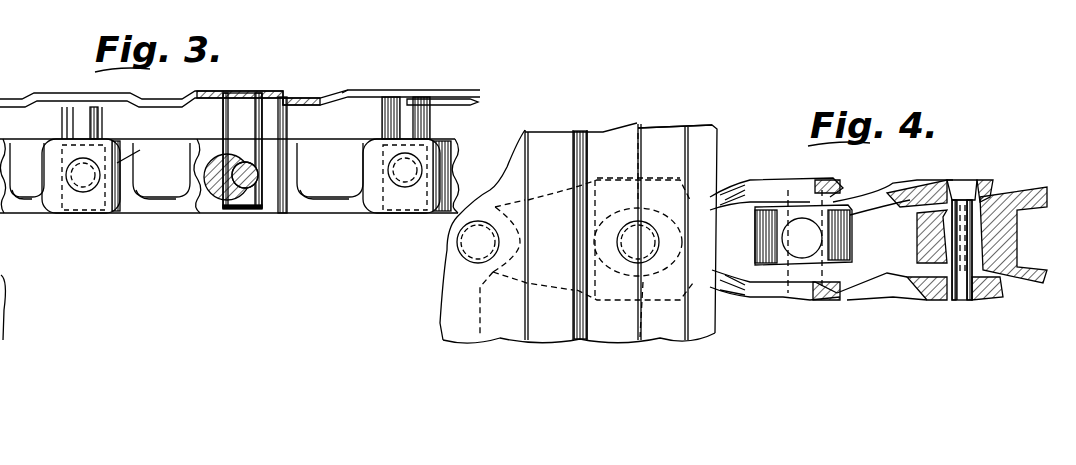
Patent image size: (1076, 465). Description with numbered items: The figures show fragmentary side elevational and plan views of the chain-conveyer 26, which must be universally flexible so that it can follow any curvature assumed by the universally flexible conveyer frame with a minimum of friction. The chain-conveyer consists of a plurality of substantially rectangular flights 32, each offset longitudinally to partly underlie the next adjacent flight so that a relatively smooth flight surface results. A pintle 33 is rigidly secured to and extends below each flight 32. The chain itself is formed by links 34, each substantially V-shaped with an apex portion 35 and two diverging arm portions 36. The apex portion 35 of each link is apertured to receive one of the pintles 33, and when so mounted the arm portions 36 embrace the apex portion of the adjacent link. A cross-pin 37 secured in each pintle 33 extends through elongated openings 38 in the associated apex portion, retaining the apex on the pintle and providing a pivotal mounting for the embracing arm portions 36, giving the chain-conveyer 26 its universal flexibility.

In FIG. 3, the chain-conveyer 26 is at (342, 84).
In FIG. 4, the chain-conveyer 26 is at (711, 118).
In FIG. 3, the flight 32 is at (147, 100).
In FIG. 4, the flight 32 is at (517, 173).
In FIG. 3, the pintle 33 is at (60, 124).
In FIG. 4, the pintle 33 is at (470, 248).
In FIG. 3, the link 34 is at (113, 202).
In FIG. 4, the link 34 is at (593, 180).
In FIG. 3, the apex portion 35 is at (50, 192).
In FIG. 4, the apex portion 35 is at (917, 236).
In FIG. 3, the arm portion 36 is at (117, 163).
In FIG. 4, the arm portion 36 is at (778, 185).
In FIG. 3, the cross-pin 37 is at (83, 187).
In FIG. 4, the cross-pin 37 is at (780, 283).
In FIG. 4, the elongated opening 38 is at (940, 190).